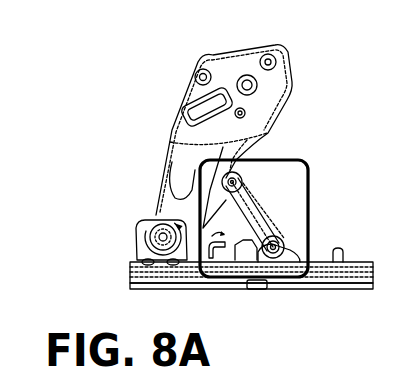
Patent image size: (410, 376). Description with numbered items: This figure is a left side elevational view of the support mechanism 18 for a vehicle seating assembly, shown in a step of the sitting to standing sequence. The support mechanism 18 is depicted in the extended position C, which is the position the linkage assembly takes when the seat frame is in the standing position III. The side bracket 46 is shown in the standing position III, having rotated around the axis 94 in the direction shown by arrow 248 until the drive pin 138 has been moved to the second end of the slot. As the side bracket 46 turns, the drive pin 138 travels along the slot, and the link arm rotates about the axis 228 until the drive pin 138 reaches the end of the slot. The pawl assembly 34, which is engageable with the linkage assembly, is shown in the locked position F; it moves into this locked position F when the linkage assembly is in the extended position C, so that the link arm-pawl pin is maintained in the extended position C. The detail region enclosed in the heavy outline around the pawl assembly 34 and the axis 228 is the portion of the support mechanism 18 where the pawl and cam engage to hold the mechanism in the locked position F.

The standing position III is at (127, 85).
The side bracket 46 is at (227, 67).
The support mechanism 18 is at (302, 152).
The drive pin 138 is at (234, 181).
The pawl assembly 34 is at (280, 213).
The axis 228 is at (293, 273).
The extended position C is at (330, 201).
The locked position F is at (315, 232).
The axis 94 is at (162, 235).
The arrow 248 is at (170, 216).